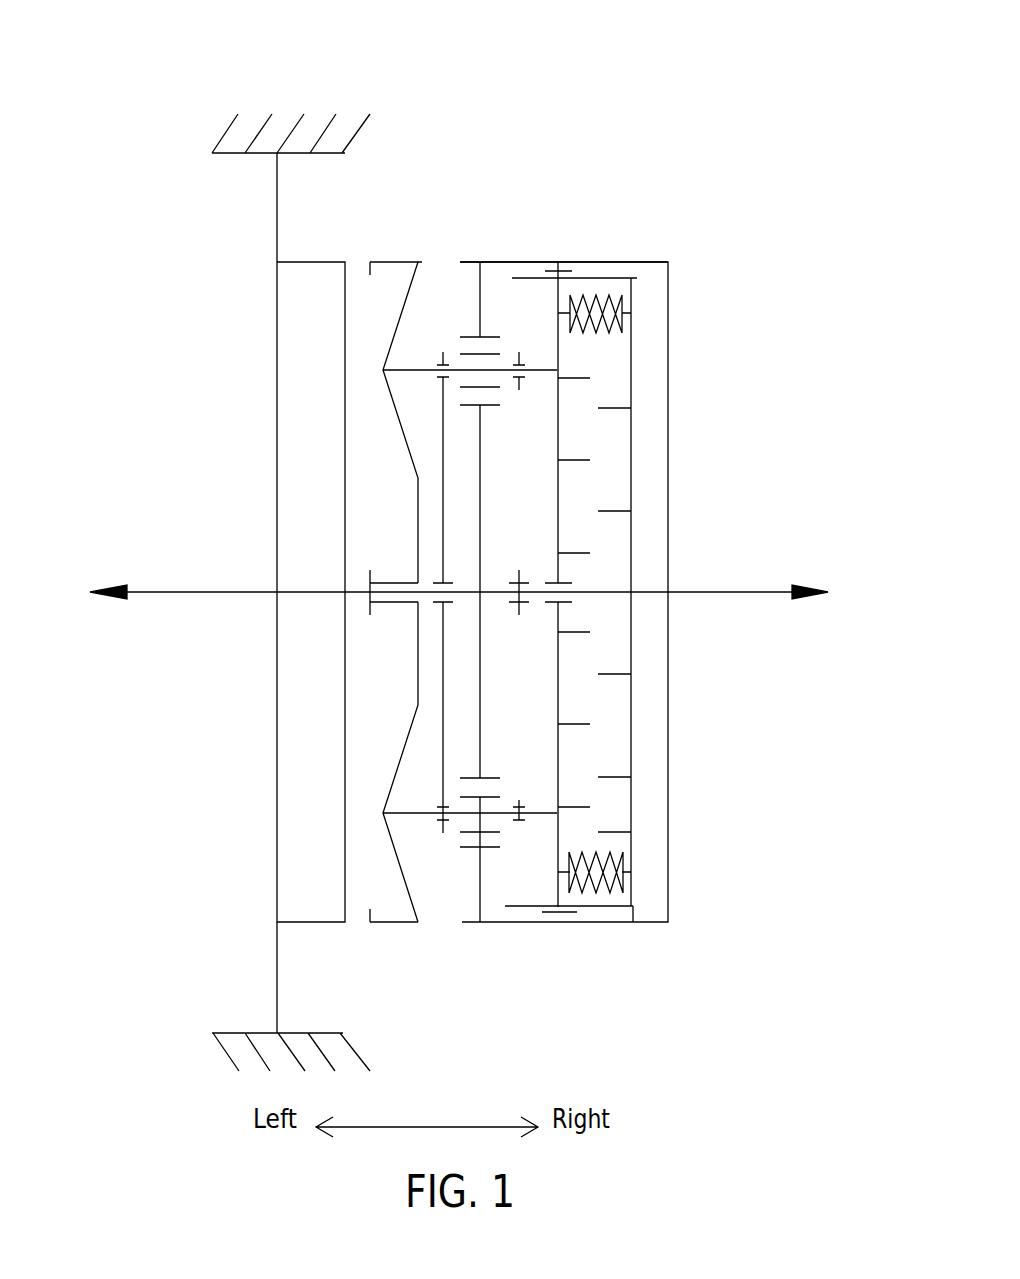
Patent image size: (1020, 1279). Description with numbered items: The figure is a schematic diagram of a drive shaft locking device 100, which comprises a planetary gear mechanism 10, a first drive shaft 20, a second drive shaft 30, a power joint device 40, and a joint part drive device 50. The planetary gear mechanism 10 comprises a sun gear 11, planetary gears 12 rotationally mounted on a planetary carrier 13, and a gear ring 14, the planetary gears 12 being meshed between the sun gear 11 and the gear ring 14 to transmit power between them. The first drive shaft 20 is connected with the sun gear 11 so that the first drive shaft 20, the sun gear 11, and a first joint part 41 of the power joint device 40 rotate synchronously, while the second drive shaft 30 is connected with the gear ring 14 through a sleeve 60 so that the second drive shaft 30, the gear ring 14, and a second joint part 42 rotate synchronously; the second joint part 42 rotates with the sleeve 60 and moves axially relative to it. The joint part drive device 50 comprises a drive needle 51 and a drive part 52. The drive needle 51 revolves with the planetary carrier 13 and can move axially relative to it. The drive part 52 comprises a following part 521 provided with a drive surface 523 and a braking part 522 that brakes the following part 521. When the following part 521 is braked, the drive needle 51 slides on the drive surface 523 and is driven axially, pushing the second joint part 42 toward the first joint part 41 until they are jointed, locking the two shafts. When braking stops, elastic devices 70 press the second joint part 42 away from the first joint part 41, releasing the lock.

The drive shaft locking device 100 is at (540, 100).
The planetary gear mechanism 10 is at (540, 608).
The sun gear 11 is at (482, 735).
The planetary gear 12 is at (483, 840).
The planetary carrier 13 is at (520, 457).
The gear ring 14 is at (481, 923).
The first drive shaft 20 is at (180, 593).
The second drive shaft 30 is at (770, 594).
The power joint device 40 is at (757, 750).
The first joint part 41 is at (628, 700).
The second joint part 42 is at (562, 770).
The joint part drive device 50 is at (253, 230).
The drive needle 51 is at (555, 370).
The drive part 52 is at (140, 290).
The following part 521 is at (375, 322).
The braking part 522 is at (300, 412).
The drive surface 523 is at (418, 262).
The sleeve 60 is at (618, 262).
The elastic devices 70 is at (622, 305).